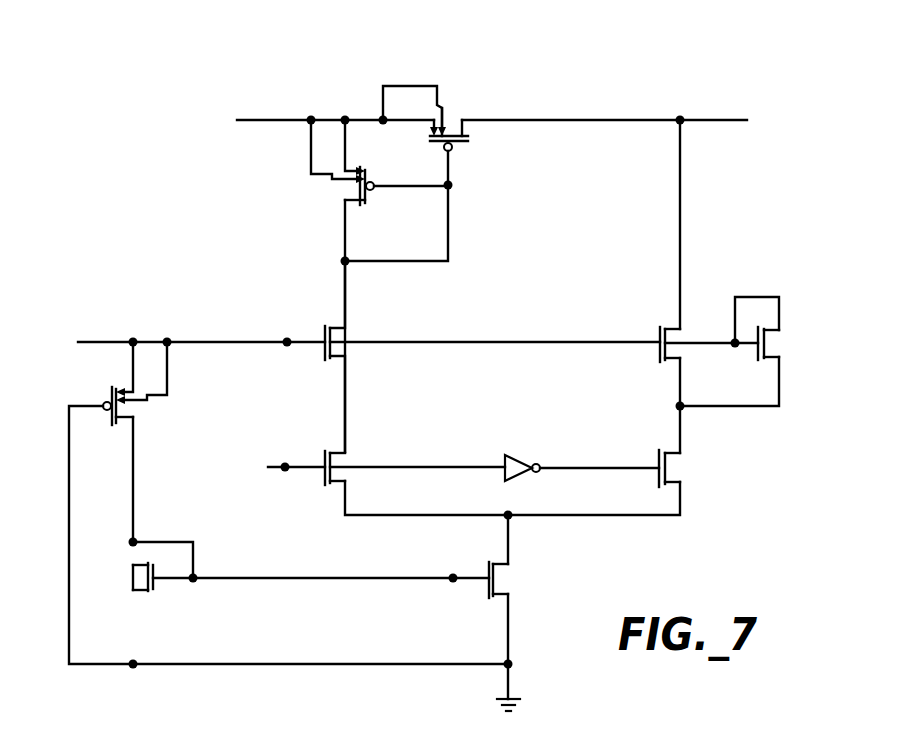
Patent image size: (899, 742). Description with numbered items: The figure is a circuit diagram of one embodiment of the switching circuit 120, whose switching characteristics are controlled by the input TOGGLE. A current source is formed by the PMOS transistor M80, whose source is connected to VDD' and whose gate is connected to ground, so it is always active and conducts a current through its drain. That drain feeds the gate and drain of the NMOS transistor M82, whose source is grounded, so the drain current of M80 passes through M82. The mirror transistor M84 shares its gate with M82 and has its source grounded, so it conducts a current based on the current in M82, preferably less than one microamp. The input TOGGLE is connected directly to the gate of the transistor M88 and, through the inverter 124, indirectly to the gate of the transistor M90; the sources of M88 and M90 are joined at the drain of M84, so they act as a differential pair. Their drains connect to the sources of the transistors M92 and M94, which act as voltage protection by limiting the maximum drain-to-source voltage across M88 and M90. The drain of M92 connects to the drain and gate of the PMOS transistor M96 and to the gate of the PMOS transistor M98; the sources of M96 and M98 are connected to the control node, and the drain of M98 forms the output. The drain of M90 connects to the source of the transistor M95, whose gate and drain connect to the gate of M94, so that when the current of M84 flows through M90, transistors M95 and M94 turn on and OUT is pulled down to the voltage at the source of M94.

The switching circuit 120 is at (590, 78).
The inverter 124 is at (521, 456).
The PMOS transistor M80 is at (146, 388).
The NMOS transistor M82 is at (140, 577).
The mirror transistor M84 is at (521, 580).
The transistor M88 is at (359, 461).
The transistor M90 is at (691, 468).
The transistor M92 is at (359, 356).
The transistor M94 is at (694, 340).
The transistor M95 is at (790, 343).
The PMOS transistor M96 is at (370, 163).
The PMOS transistor M98 is at (462, 122).